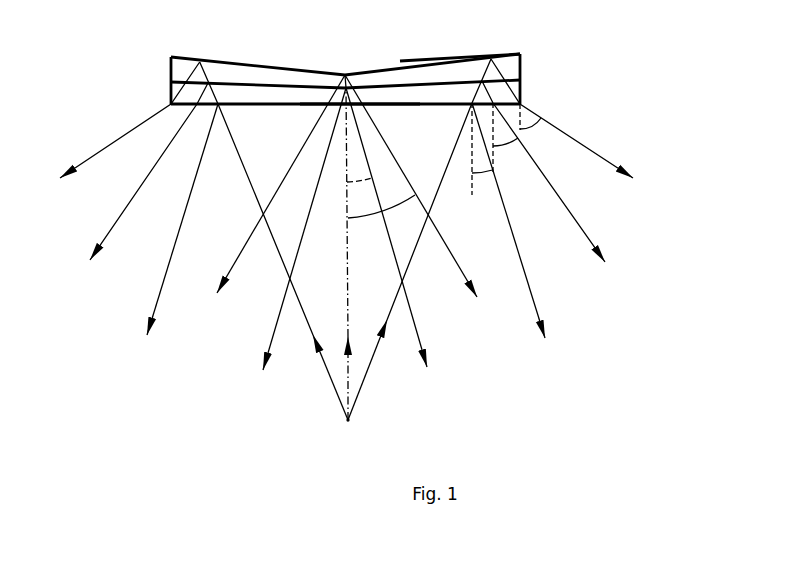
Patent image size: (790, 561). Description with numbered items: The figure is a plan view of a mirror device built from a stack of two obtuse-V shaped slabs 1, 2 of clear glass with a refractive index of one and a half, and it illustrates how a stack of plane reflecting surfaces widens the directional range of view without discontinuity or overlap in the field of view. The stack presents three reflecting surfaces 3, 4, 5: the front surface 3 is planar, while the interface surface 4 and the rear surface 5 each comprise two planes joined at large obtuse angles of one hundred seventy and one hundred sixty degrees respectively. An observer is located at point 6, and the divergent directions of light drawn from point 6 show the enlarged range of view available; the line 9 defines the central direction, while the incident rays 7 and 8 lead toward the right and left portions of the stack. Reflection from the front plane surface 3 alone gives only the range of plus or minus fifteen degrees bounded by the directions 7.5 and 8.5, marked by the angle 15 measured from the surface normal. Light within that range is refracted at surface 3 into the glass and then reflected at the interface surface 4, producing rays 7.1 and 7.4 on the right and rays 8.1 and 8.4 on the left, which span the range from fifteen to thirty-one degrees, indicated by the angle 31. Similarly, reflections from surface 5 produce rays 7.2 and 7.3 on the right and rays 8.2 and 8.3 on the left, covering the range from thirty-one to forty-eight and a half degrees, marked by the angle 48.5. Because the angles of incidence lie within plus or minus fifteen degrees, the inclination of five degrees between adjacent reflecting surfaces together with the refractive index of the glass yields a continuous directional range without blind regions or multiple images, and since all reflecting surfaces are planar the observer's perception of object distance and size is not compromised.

The obtuse-V shaped slab 1 is at (231, 97).
The obtuse-V shaped slab 2 is at (265, 75).
The front plane reflecting surface 3 is at (382, 103).
The reflecting surface of interface 4 is at (433, 87).
The reflecting surface 5 is at (471, 62).
The observer point 6 is at (350, 434).
The right incident ray 7 is at (380, 350).
The left incident ray 8 is at (317, 348).
The central direction line 9 is at (350, 295).
The ray 7.1 is at (398, 241).
The ray 7.2 is at (424, 197).
The ray 7.3 is at (577, 128).
The ray 7.4 is at (555, 183).
The direction 7.5 is at (518, 234).
The ray 8.1 is at (297, 241).
The ray 8.2 is at (272, 197).
The ray 8.3 is at (115, 133).
The ray 8.4 is at (139, 185).
The direction 8.5 is at (174, 233).
The fifteen-degree angle 15 is at (376, 197).
The thirty-one-degree angle 31 is at (390, 210).
The forty-eight-and-a-half-degree angle 48.5 is at (531, 124).